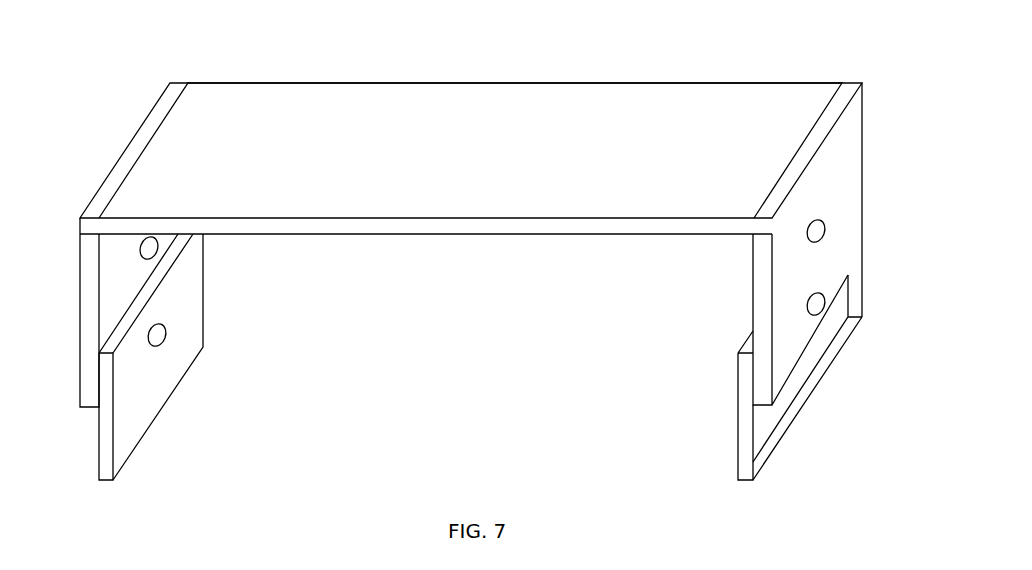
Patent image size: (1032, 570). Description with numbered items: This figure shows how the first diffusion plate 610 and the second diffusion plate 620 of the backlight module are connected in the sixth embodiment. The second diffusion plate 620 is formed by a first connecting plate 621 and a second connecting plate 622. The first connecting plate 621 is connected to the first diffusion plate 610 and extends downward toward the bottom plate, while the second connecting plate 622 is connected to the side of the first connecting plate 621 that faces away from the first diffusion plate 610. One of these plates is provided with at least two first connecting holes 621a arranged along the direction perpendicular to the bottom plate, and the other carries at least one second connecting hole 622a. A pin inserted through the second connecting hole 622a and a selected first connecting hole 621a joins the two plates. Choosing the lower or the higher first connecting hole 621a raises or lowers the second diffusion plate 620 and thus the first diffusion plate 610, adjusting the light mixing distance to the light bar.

The first diffusion plate 610 is at (405, 142).
The second diffusion plate 620 is at (478, 286).
The first connecting plate 621 is at (106, 298).
The first connecting hole 621a is at (150, 243).
The second connecting plate 622 is at (157, 380).
The second connecting hole 622a is at (160, 334).